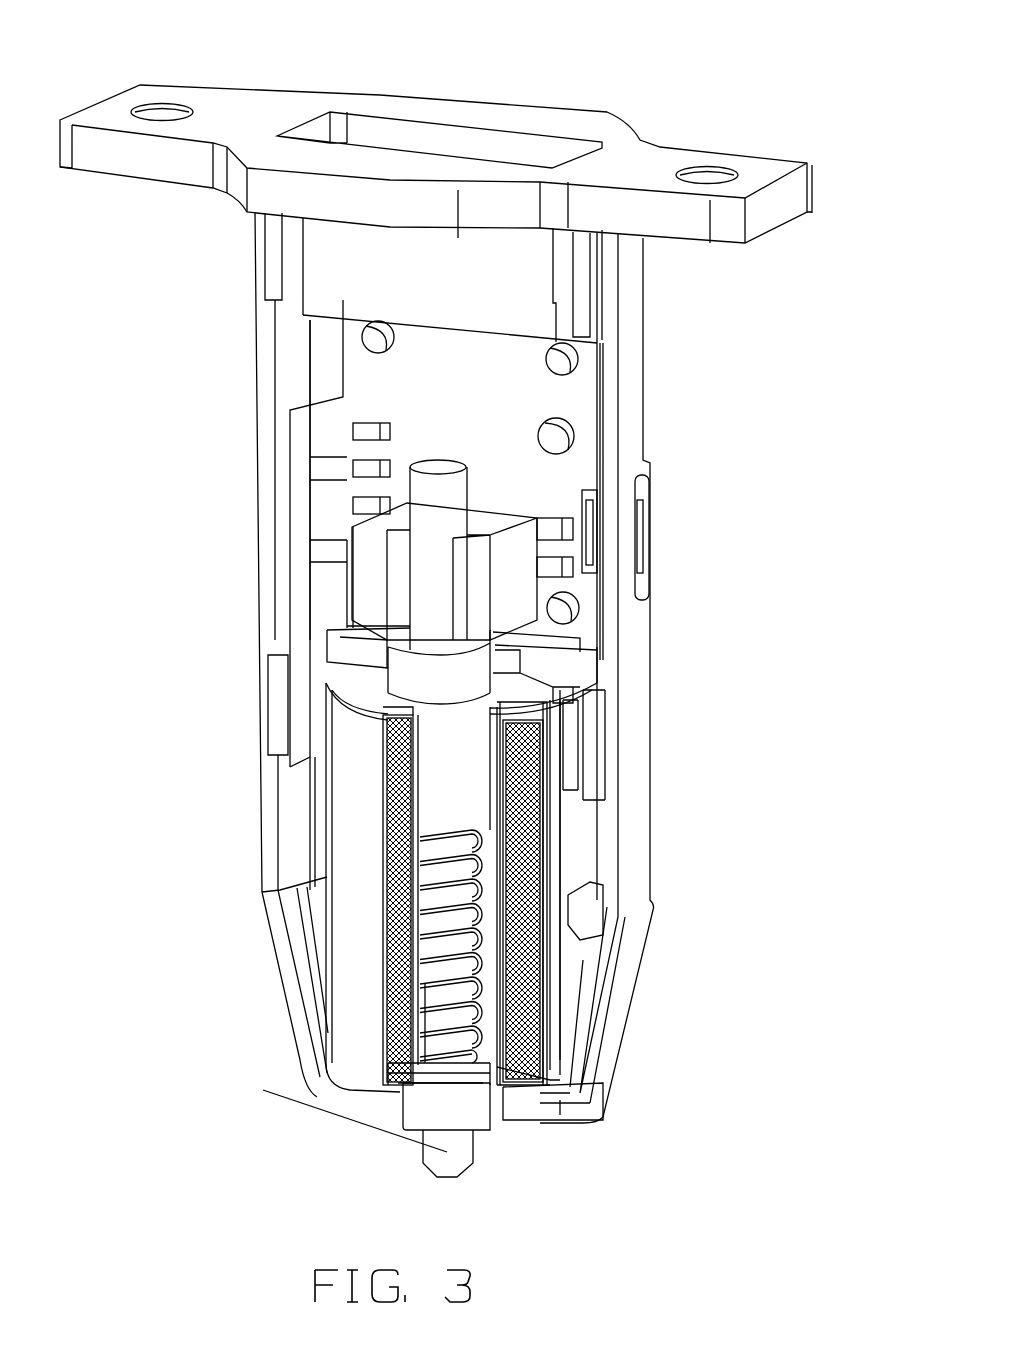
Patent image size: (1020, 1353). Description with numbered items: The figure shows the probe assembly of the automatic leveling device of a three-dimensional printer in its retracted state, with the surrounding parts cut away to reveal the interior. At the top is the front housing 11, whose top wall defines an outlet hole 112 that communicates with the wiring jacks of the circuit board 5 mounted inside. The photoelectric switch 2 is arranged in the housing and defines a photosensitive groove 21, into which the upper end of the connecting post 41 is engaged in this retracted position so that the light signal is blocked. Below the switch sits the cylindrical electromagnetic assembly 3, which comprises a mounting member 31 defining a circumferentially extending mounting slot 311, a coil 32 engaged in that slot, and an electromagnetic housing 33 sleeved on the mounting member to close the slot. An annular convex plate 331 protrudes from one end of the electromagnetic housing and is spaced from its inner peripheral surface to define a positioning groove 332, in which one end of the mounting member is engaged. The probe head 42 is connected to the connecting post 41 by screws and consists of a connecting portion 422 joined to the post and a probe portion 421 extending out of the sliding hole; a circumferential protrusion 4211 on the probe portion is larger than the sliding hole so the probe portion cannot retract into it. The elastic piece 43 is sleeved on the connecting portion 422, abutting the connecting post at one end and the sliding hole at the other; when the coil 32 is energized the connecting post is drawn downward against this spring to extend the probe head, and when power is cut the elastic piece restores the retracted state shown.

The front housing 11 is at (436, 121).
The outlet hole 112 is at (435, 133).
The circuit board 5 is at (577, 410).
The photoelectric switch 2 is at (507, 590).
The photosensitive groove 21 is at (400, 553).
The connecting post 41 is at (440, 607).
The mounting slot 311 is at (338, 704).
The electromagnetic assembly 3 is at (150, 773).
The mounting member 31 is at (388, 767).
The coil 32 is at (388, 815).
The electromagnetic housing 33 is at (358, 878).
The elastic piece 43 is at (493, 873).
The positioning groove 332 is at (495, 993).
The annular convex plate 331 is at (495, 1010).
The probe head 42 is at (205, 1020).
The connecting portion 422 is at (415, 1017).
The probe portion 421 is at (447, 1150).
The protrusion 4211 is at (465, 1105).